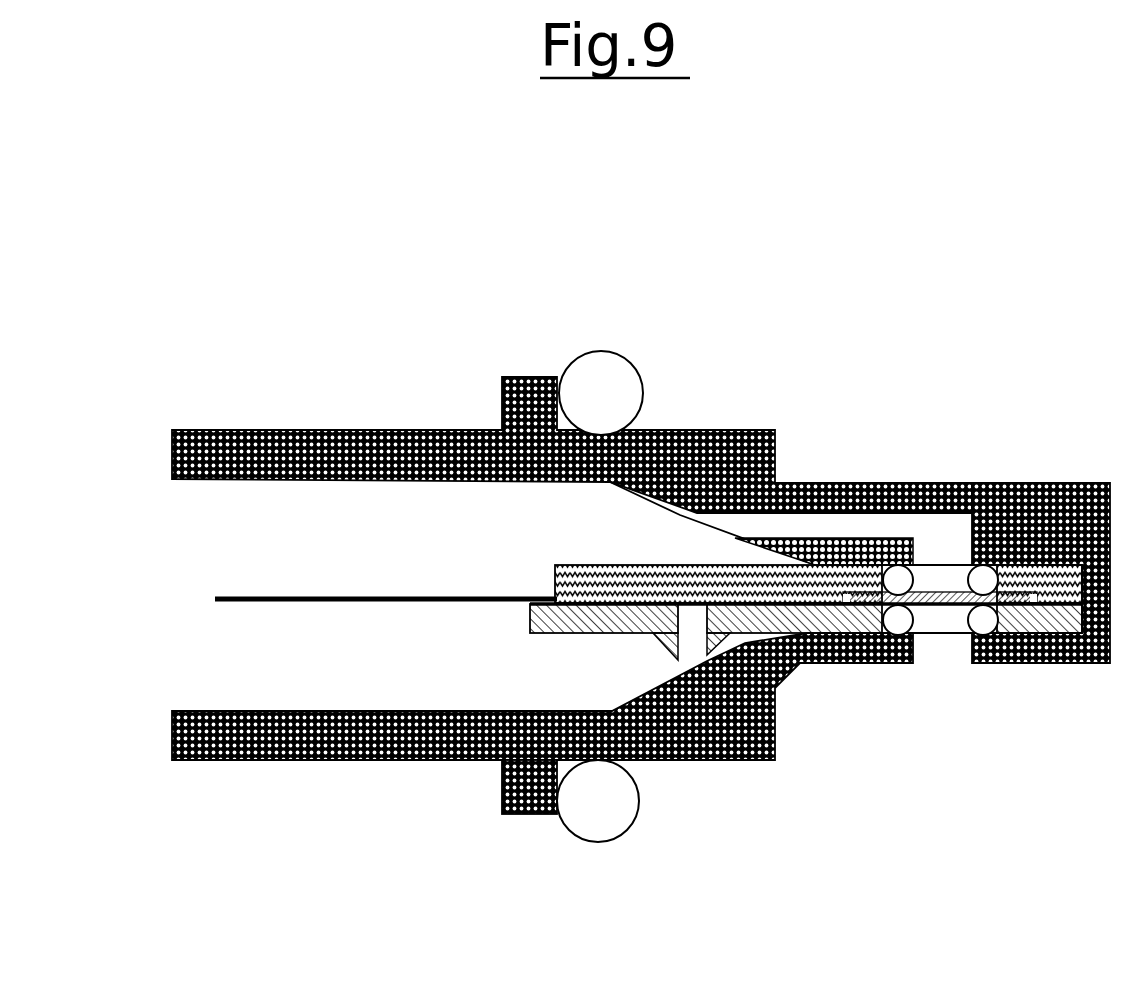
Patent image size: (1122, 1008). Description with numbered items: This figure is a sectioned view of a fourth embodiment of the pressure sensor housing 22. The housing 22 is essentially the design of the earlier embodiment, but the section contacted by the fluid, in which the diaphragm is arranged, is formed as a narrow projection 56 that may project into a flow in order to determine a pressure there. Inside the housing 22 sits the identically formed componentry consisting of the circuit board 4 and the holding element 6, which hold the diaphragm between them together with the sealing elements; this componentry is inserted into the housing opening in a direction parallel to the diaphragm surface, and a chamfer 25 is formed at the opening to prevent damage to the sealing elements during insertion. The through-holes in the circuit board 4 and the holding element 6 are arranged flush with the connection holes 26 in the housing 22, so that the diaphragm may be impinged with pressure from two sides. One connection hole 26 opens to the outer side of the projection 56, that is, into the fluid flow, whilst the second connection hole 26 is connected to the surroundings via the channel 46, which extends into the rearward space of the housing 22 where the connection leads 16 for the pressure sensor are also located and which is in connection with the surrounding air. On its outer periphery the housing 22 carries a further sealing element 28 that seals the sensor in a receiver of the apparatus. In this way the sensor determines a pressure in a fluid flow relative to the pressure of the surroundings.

The circuit board 4 is at (545, 632).
The holding element 6 is at (580, 562).
The connection leads 16 is at (252, 587).
The housing 22 is at (727, 437).
The chamfer 25 is at (775, 690).
The connection holes 26 is at (943, 547).
The sealing element 28 is at (633, 357).
The channel 46 is at (787, 523).
The projection 56 is at (1082, 483).